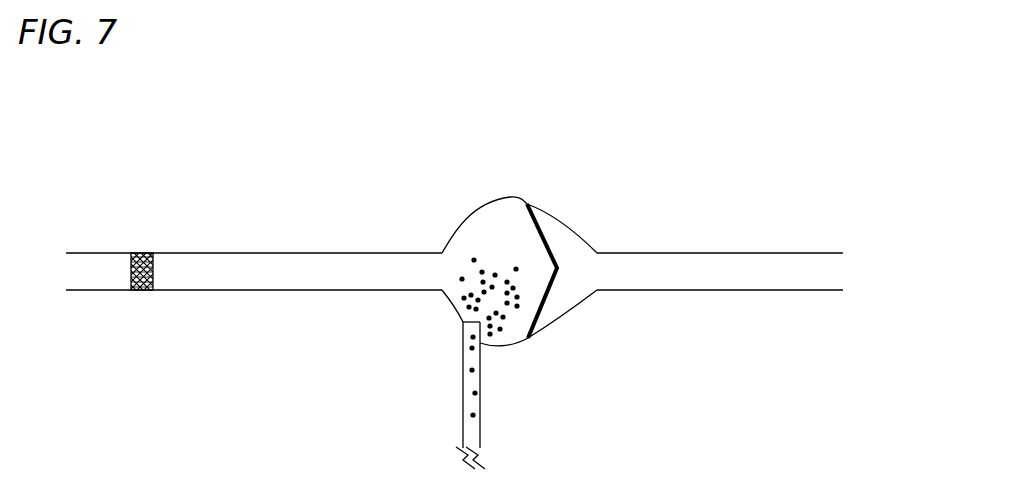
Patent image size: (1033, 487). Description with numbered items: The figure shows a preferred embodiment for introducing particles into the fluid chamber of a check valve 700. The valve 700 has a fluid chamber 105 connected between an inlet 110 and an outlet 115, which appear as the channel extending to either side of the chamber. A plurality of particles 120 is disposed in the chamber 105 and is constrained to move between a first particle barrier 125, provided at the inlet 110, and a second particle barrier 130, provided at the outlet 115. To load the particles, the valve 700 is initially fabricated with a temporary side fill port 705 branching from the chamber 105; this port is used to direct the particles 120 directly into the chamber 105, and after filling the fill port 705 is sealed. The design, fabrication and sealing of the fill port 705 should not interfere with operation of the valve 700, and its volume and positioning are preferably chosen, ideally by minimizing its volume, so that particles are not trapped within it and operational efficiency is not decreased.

The valve 700 is at (712, 116).
The fluid chamber 105 is at (389, 317).
The inlet 110 is at (84, 275).
The outlet 115 is at (747, 270).
The particles 120 is at (493, 272).
The first particle barrier 125 is at (148, 252).
The second particle barrier 130 is at (553, 287).
The temporary side fill port 705 is at (487, 397).